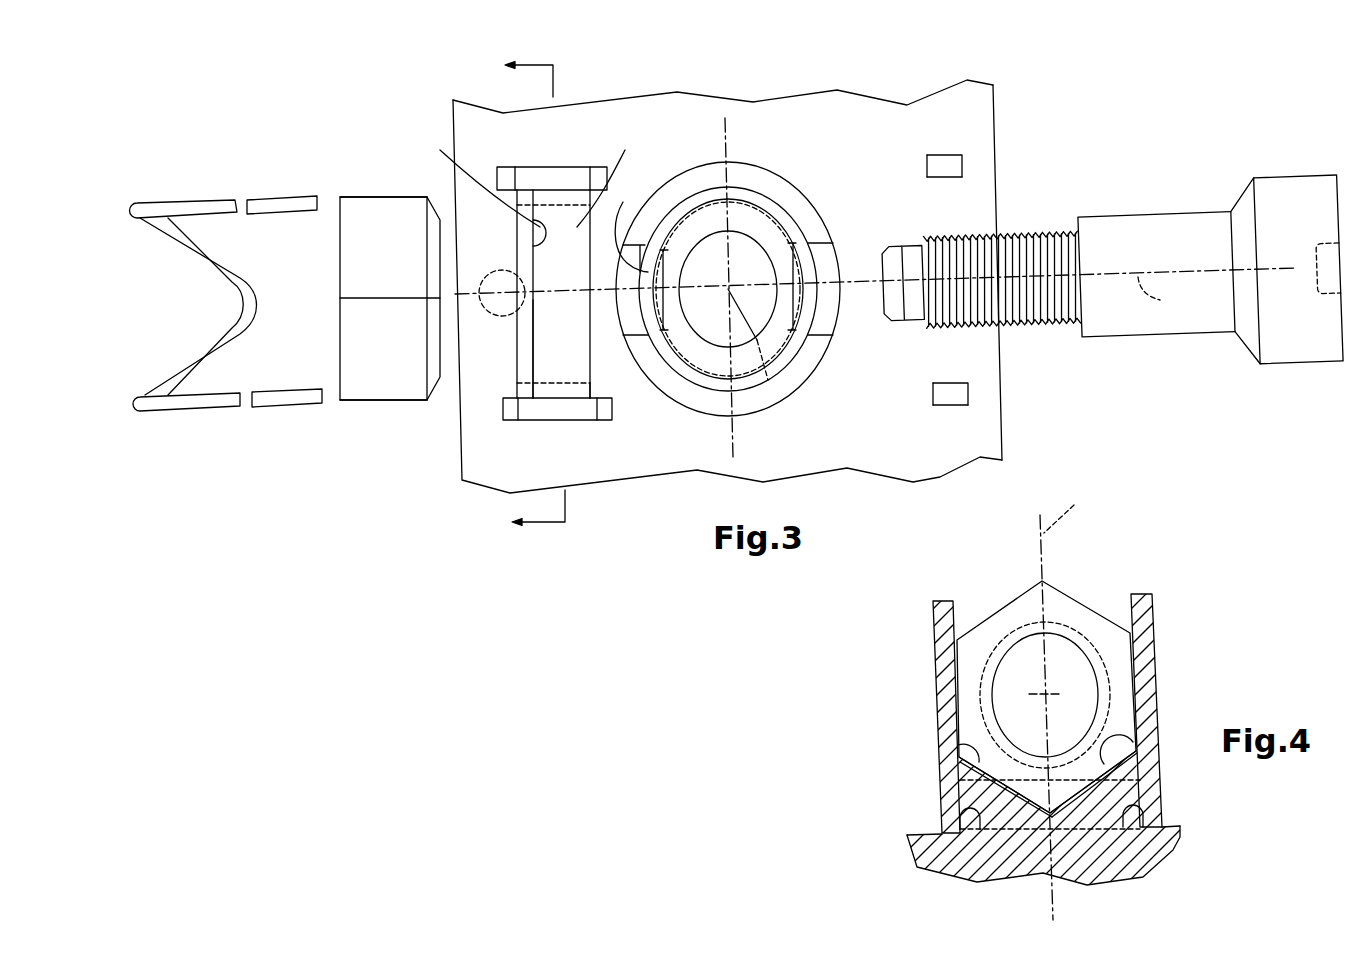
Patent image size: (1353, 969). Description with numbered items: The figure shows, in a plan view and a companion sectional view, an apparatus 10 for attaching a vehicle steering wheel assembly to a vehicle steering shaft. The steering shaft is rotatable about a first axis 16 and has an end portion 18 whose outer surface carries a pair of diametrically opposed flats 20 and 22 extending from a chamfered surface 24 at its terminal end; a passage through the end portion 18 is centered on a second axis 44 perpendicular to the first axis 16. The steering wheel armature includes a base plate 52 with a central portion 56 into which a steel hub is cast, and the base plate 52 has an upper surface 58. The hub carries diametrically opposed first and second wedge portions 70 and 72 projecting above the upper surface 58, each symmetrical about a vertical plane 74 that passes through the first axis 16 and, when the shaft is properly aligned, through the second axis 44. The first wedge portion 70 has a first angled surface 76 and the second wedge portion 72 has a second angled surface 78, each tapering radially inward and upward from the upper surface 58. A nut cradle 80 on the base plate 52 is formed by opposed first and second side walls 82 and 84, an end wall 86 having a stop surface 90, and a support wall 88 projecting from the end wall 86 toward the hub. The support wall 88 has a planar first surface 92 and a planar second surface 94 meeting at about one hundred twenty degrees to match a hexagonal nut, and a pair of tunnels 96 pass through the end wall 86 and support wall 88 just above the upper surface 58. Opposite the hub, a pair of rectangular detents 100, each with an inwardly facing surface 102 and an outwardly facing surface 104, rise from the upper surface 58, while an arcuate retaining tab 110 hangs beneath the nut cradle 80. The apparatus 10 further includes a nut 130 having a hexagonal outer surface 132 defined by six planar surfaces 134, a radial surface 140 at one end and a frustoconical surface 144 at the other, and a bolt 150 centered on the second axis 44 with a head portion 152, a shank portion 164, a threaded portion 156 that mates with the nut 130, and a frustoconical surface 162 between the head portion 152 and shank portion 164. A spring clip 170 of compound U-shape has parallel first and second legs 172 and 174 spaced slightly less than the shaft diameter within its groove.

In FIG. 3, the apparatus 10 is at (898, 75).
In FIG. 3, the first axis 16 is at (767, 382).
In FIG. 3, the end portion 18 is at (718, 255).
In FIG. 3, the flat 20 is at (718, 289).
In FIG. 3, the flat 22 is at (696, 265).
In FIG. 3, the chamfered surface 24 is at (757, 227).
In FIG. 3, the second axis 44 is at (1117, 272).
In FIG. 4, the second axis 44 is at (1045, 695).
In FIG. 3, the base plate 52 is at (753, 268).
In FIG. 4, the base plate 52 is at (1065, 858).
In FIG. 3, the central portion 56 is at (688, 122).
In FIG. 3, the upper surface 58 is at (975, 118).
In FIG. 4, the upper surface 58 is at (1163, 824).
In FIG. 3, the first wedge portion 70 is at (627, 325).
In FIG. 3, the second wedge portion 72 is at (830, 318).
In FIG. 3, the vertical plane 74 is at (1161, 294).
In FIG. 4, the vertical plane 74 is at (1067, 506).
In FIG. 3, the first angled surface 76 is at (625, 308).
In FIG. 3, the second angled surface 78 is at (833, 307).
In FIG. 3, the nut cradle 80 is at (528, 262).
In FIG. 4, the nut cradle 80 is at (961, 744).
In FIG. 3, the first side wall 82 is at (537, 413).
In FIG. 4, the first side wall 82 is at (951, 622).
In FIG. 3, the second side wall 84 is at (525, 178).
In FIG. 4, the second side wall 84 is at (1143, 670).
In FIG. 3, the end wall 86 is at (527, 262).
In FIG. 3, the support wall 88 is at (608, 177).
In FIG. 4, the support wall 88 is at (1090, 813).
In FIG. 3, the stop surface 90 is at (462, 178).
In FIG. 4, the stop surface 90 is at (1062, 795).
In FIG. 3, the first surface 92 is at (555, 367).
In FIG. 4, the first surface 92 is at (960, 750).
In FIG. 3, the second surface 94 is at (565, 215).
In FIG. 4, the second surface 94 is at (1109, 747).
In FIG. 3, the tunnels 96 is at (582, 390).
In FIG. 4, the tunnels 96 is at (968, 825).
In FIG. 3, the detents 100 is at (981, 286).
In FIG. 3, the inwardly facing surface 102 is at (950, 178).
In FIG. 3, the outwardly facing surface 104 is at (942, 155).
In FIG. 3, the retaining tab 110 is at (500, 312).
In FIG. 3, the nut 130 is at (364, 283).
In FIG. 4, the nut 130 is at (1041, 723).
In FIG. 3, the hexagonal outer surface 132 is at (368, 385).
In FIG. 4, the hexagonal outer surface 132 is at (1056, 587).
In FIG. 3, the planar surfaces 134 is at (405, 200).
In FIG. 4, the planar surfaces 134 is at (996, 611).
In FIG. 3, the radial surface 140 is at (340, 222).
In FIG. 3, the frustoconical surface 144 is at (437, 345).
In FIG. 3, the bolt 150 is at (1111, 255).
In FIG. 3, the head portion 152 is at (1298, 269).
In FIG. 3, the threaded portion 156 is at (981, 280).
In FIG. 3, the frustoconical surface 162 is at (1245, 271).
In FIG. 3, the shank portion 164 is at (1156, 274).
In FIG. 3, the spring clip 170 is at (226, 312).
In FIG. 3, the first leg 172 is at (280, 400).
In FIG. 3, the second leg 174 is at (265, 198).